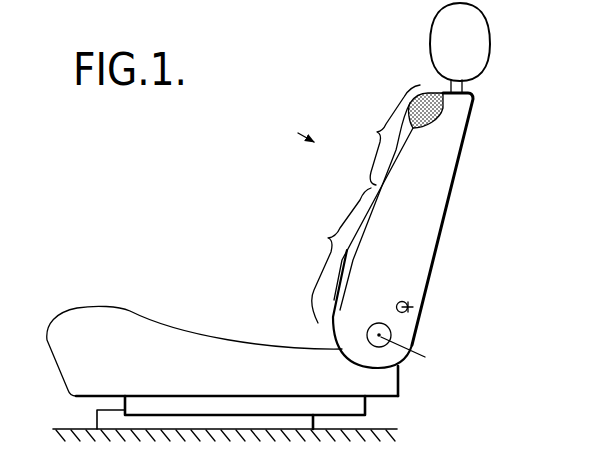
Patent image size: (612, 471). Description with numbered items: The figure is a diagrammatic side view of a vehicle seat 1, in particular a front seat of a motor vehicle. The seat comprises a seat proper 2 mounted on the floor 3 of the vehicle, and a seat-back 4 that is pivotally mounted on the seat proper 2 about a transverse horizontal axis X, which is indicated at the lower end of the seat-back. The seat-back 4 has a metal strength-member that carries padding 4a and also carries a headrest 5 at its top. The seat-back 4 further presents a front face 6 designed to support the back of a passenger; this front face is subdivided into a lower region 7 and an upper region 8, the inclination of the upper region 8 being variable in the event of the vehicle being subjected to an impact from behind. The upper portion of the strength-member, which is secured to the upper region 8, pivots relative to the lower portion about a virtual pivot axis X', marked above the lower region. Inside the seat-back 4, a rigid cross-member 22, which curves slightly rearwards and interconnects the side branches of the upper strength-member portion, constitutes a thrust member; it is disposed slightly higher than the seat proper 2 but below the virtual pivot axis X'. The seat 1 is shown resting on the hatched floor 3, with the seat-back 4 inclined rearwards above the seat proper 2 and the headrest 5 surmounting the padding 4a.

The vehicle seat 1 is at (228, 282).
The seat proper 2 is at (120, 330).
The floor 3 is at (63, 428).
The seat-back 4 is at (412, 226).
The padding 4a is at (443, 107).
The headrest 5 is at (471, 37).
The front face 6 is at (368, 205).
The lower region 7 is at (341, 255).
The upper region 8 is at (388, 135).
The cross-member 22 is at (414, 309).